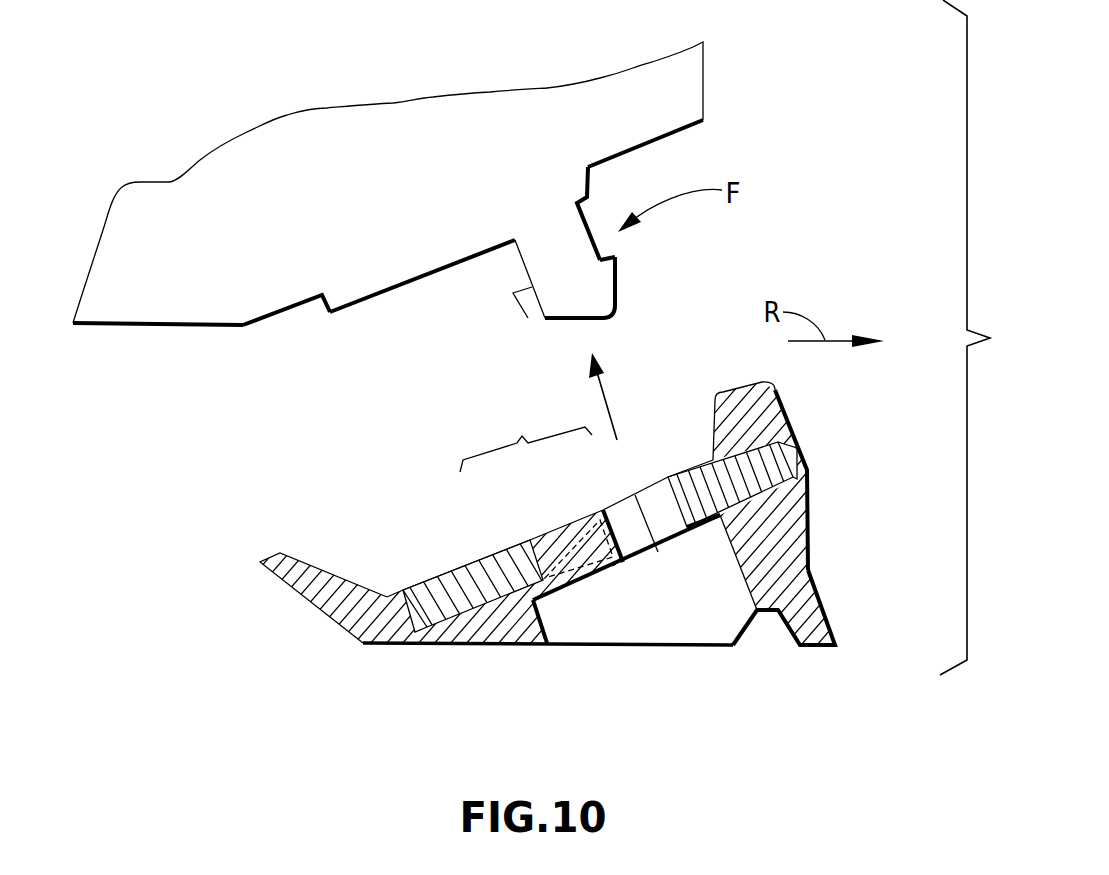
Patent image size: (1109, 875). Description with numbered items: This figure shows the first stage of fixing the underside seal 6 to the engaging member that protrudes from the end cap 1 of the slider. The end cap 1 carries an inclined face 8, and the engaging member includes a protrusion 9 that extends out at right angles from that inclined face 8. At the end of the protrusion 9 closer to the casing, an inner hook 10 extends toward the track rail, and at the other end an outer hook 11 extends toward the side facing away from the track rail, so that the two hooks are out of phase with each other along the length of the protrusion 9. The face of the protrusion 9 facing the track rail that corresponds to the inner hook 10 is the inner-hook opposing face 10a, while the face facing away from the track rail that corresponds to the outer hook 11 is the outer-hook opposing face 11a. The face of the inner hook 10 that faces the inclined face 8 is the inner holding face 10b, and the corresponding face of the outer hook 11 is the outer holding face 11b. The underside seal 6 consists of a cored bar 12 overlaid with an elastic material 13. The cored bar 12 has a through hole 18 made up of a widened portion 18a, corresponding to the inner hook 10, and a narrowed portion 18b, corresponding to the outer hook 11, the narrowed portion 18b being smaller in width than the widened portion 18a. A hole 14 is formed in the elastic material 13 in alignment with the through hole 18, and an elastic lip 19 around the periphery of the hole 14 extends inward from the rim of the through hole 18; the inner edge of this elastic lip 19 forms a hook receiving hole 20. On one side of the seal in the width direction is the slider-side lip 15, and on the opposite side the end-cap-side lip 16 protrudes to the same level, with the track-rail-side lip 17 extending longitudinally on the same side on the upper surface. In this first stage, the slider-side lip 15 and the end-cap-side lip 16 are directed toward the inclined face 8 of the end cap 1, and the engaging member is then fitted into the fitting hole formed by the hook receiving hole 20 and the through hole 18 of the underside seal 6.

The end cap 1 is at (258, 152).
The underside seal 6 is at (544, 551).
The inclined face 8 is at (362, 302).
The protrusion 9 is at (555, 242).
The inner hook 10 is at (598, 293).
The inner-hook opposing face 10a is at (588, 215).
The inner holding face 10b is at (607, 260).
The outer hook 11 is at (528, 322).
The outer-hook opposing face 11a is at (513, 238).
The outer holding face 11b is at (528, 305).
The cored bar 12 is at (457, 585).
The elastic material 13 is at (458, 658).
The hole 14 is at (548, 627).
The slider-side lip 15 is at (297, 575).
The end-cap-side lip 16 is at (763, 420).
The track-rail-side lip 17 is at (837, 642).
The through hole 18 is at (687, 566).
The widened portion 18a is at (552, 535).
The narrowed portion 18b is at (618, 530).
The elastic lip 19 is at (568, 555).
The hook receiving hole 20 is at (630, 562).